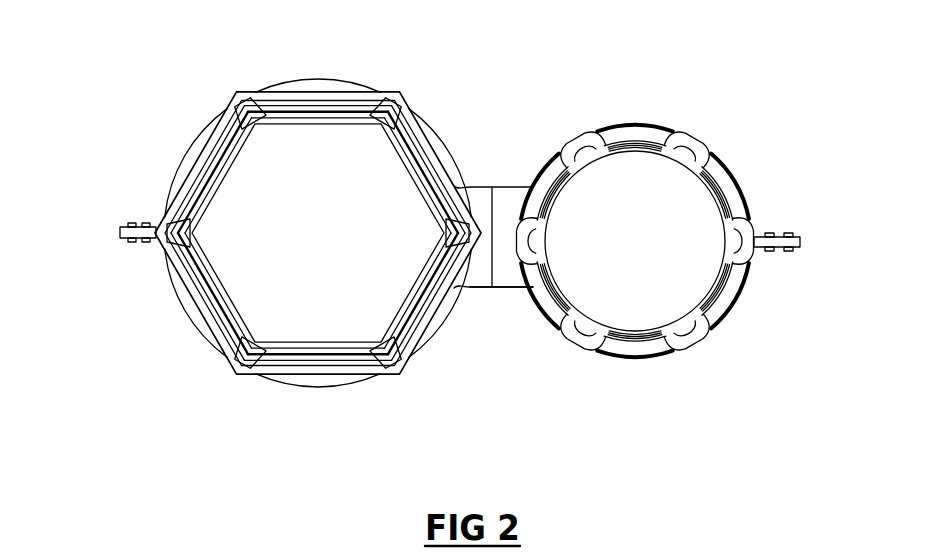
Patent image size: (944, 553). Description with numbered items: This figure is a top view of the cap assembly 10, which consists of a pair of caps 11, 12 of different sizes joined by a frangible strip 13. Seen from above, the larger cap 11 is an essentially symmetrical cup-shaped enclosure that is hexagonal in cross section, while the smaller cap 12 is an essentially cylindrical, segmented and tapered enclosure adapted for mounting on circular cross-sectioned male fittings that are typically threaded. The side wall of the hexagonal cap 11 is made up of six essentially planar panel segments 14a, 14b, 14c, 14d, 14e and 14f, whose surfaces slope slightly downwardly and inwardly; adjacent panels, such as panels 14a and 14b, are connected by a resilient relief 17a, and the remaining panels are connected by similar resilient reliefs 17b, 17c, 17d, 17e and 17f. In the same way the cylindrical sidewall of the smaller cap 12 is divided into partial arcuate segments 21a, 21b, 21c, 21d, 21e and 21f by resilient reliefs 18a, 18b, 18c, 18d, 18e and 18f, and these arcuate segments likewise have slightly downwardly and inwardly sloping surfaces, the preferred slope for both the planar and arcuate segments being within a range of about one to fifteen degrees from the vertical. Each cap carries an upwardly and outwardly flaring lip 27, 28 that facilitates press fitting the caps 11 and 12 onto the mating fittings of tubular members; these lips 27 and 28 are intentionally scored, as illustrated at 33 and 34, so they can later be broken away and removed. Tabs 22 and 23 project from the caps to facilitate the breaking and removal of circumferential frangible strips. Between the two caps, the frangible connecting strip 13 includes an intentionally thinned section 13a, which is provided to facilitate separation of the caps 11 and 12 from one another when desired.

The assembly 10 is at (355, 397).
The cap 11 is at (182, 306).
The cap 12 is at (742, 183).
The frangible strip 13 is at (492, 188).
The thinned section 13a is at (486, 289).
The side wall panel segment 14a is at (210, 170).
The side wall panel segment 14b is at (311, 103).
The side wall panel segment 14c is at (423, 176).
The side wall panel segment 14d is at (428, 300).
The side wall panel segment 14e is at (314, 340).
The side wall panel segment 14f is at (210, 288).
The resilient relief 17a is at (243, 108).
The resilient relief 17b is at (402, 110).
The resilient relief 17c is at (194, 233).
The resilient relief 17d is at (236, 372).
The resilient relief 17e is at (393, 377).
The resilient relief 17f is at (447, 240).
The resilient relief 18a is at (577, 136).
The resilient relief 18b is at (522, 258).
The resilient relief 18c is at (577, 346).
The resilient relief 18d is at (700, 346).
The resilient relief 18e is at (758, 262).
The resilient relief 18f is at (700, 136).
The partial arcuate segment 21a is at (560, 193).
The partial arcuate segment 21b is at (640, 149).
The partial arcuate segment 21c is at (634, 324).
The partial arcuate segment 21d is at (738, 300).
The partial arcuate segment 21e is at (558, 288).
The partial arcuate segment 21f is at (712, 204).
The tab 22 is at (120, 232).
The tab 23 is at (800, 242).
The lip 27 is at (190, 203).
The lip 28 is at (637, 124).
The scoring 33 is at (318, 376).
The scoring 34 is at (637, 357).